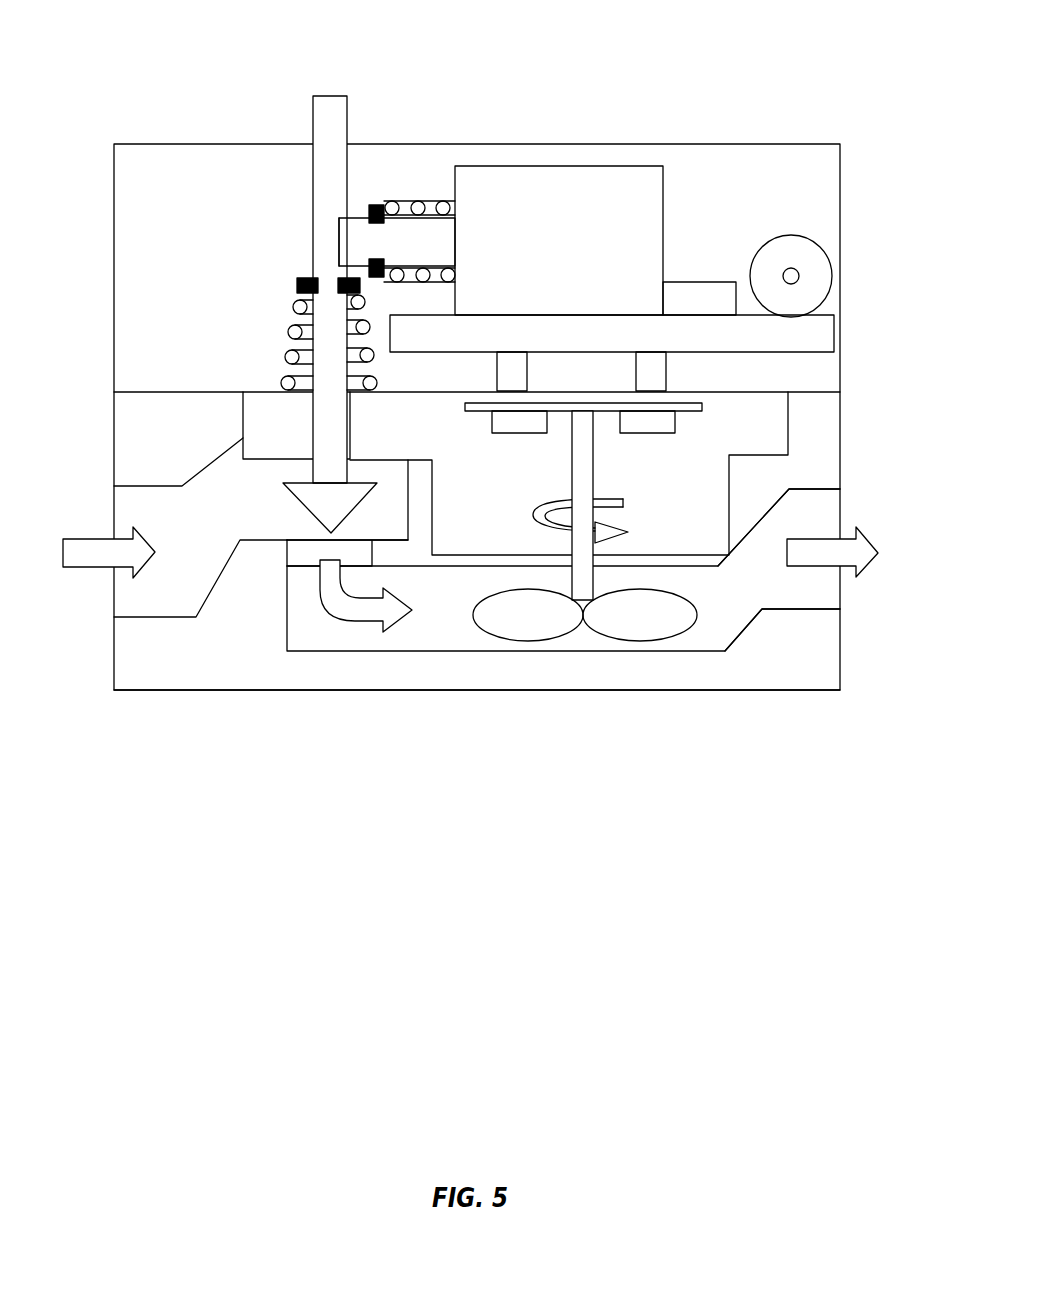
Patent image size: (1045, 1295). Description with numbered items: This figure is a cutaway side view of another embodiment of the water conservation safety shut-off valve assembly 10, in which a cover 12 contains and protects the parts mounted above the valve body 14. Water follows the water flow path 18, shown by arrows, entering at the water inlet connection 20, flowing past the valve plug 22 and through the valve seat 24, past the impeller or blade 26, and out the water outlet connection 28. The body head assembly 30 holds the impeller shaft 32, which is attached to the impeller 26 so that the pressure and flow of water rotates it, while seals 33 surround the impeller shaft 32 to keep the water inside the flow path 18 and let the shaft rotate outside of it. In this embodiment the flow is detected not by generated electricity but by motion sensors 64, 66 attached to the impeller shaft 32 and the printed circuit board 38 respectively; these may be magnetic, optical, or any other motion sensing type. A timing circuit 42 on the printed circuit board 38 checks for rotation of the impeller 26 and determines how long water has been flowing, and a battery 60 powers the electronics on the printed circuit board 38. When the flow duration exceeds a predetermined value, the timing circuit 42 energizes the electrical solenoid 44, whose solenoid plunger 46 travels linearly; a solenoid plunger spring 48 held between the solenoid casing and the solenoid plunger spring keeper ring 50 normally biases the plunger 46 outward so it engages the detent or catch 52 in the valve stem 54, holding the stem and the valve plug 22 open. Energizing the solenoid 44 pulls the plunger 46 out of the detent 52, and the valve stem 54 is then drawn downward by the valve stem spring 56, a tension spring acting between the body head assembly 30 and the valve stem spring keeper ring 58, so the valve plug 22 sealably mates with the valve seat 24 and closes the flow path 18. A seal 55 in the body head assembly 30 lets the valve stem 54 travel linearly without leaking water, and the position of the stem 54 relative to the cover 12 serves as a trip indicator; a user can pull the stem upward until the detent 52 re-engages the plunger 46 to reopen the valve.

The water conservation safety shut-off valve assembly 10 is at (680, 58).
The cover 12 is at (812, 144).
The valve body 14 is at (612, 692).
The water flow path 18 is at (85, 550).
The water inlet connection 20 is at (130, 515).
The valve plug 22 is at (310, 496).
The valve seat 24 is at (285, 541).
The impeller or blade 26 is at (655, 630).
The water outlet connection 28 is at (840, 512).
The body head assembly 30 is at (700, 533).
The impeller shaft 32 is at (590, 514).
The seals 33 is at (568, 553).
The printed circuit board 38 is at (820, 338).
The timing circuit 42 is at (686, 282).
The electrical solenoid 44 is at (595, 186).
The solenoid plunger 46 is at (440, 236).
The solenoid plunger spring 48 is at (420, 200).
The solenoid plunger spring keeper ring 50 is at (378, 205).
The detent or catch 52 is at (338, 232).
The valve stem 54 is at (328, 95).
The seal 55 is at (333, 428).
The valve stem spring 56 is at (290, 357).
The valve stem spring keeper ring 58 is at (302, 280).
The battery 60 is at (825, 256).
The motion sensor 64 is at (652, 428).
The motion sensor 66 is at (655, 358).